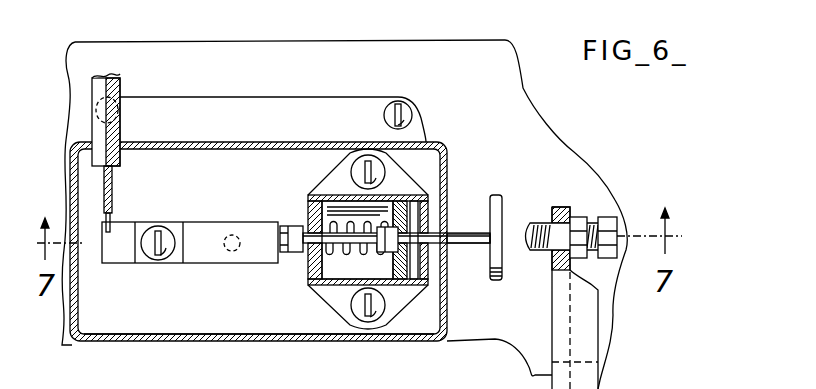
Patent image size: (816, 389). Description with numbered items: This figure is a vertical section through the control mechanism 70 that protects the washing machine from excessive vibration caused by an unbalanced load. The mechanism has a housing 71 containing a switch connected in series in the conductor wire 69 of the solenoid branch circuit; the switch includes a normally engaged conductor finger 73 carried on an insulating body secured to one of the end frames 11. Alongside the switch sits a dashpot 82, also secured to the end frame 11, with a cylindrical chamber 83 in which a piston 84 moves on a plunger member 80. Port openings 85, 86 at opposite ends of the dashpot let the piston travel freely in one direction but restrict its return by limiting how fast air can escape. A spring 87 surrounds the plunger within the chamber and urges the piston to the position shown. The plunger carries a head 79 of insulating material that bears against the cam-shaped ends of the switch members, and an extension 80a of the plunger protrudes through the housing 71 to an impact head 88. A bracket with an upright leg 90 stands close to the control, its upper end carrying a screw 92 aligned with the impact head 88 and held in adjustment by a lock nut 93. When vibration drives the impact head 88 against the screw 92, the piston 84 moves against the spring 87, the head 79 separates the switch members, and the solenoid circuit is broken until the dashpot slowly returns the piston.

The end frame 11 is at (545, 138).
The conductor wire 69 is at (114, 198).
The control mechanism 70 is at (170, 343).
The housing 71 is at (228, 341).
The conductor finger 73 is at (225, 263).
The head of insulating material 79 is at (290, 252).
The plunger member 80 is at (382, 258).
The extension 80a is at (468, 246).
The dashpot 82 is at (395, 182).
The cylindrical chamber 83 is at (333, 195).
The piston 84 is at (407, 200).
The port opening 85 is at (305, 214).
The port opening 86 is at (430, 220).
The spring 87 is at (340, 258).
The impact head 88 is at (497, 195).
The upright leg 90 is at (558, 305).
The screw 92 is at (535, 225).
The lock nut 93 is at (580, 217).